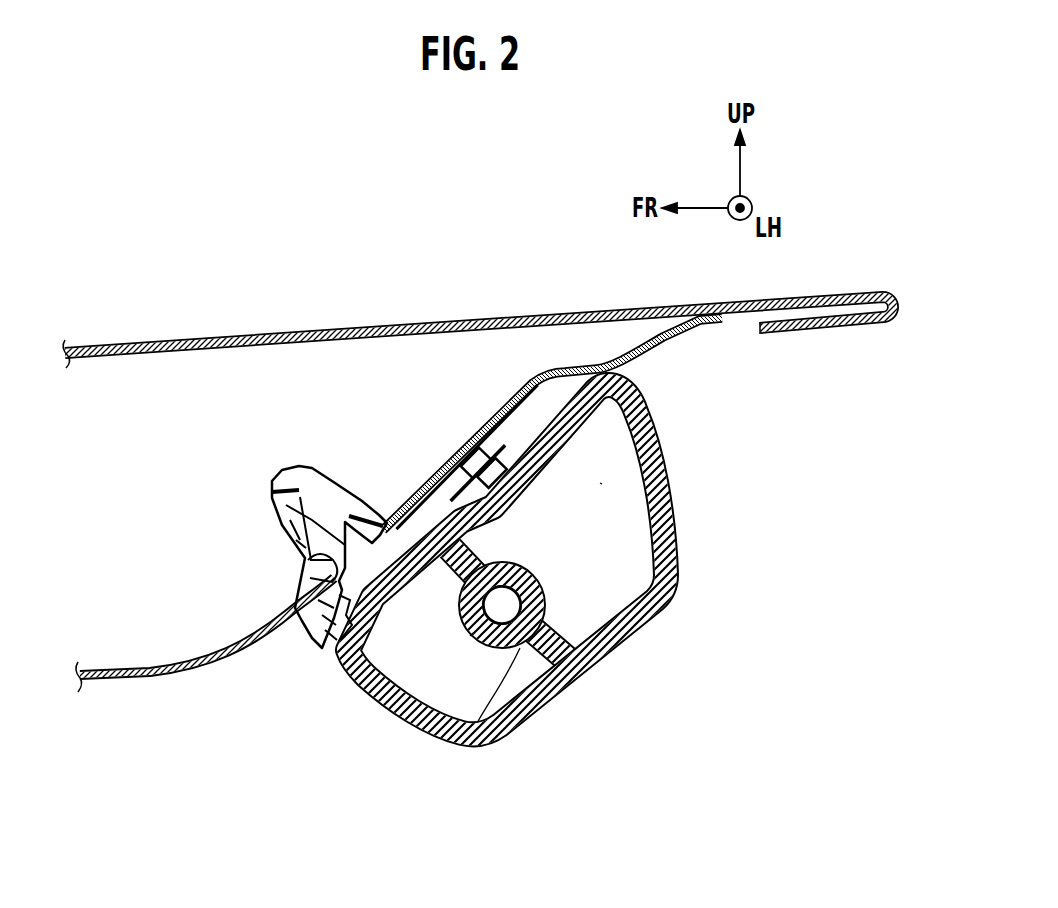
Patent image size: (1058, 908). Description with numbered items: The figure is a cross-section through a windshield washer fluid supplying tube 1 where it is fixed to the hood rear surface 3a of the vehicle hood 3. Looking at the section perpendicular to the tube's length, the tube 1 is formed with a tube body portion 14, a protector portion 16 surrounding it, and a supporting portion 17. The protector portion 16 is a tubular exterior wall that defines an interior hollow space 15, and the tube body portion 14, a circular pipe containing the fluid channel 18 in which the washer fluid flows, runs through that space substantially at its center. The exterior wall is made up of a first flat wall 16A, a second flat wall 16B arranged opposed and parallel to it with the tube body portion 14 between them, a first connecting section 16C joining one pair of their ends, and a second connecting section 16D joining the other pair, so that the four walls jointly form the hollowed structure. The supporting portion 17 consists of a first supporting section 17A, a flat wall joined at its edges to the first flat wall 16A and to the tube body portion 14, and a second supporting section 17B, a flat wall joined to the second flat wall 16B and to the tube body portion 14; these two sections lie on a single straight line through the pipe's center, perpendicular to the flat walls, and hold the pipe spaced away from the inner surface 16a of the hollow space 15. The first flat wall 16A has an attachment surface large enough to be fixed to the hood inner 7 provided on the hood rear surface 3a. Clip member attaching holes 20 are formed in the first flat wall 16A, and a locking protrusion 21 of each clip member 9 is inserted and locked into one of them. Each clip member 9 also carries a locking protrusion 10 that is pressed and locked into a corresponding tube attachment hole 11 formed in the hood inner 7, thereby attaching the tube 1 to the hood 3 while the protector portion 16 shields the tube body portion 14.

The tube 1 is at (585, 705).
The hood 3 is at (350, 329).
The hood rear surface 3a is at (733, 325).
The hood inner 7 is at (140, 684).
The clip member 9 is at (445, 455).
The locking protrusion 10 is at (283, 480).
The tube attachment hole 11 is at (300, 560).
The tube body portion 14 is at (472, 634).
The interior hollow space 15 is at (600, 485).
The protector portion 16 is at (501, 559).
The first flat wall 16A is at (490, 440).
The inner surface 16a is at (547, 407).
The second flat wall 16B is at (612, 633).
The first connecting section 16C is at (655, 432).
The second connecting section 16D is at (345, 655).
The supporting portion 17 is at (426, 676).
The first supporting section 17A is at (431, 578).
The second supporting section 17B is at (470, 736).
The fluid channel 18 is at (510, 603).
The clip member attaching hole 20 is at (483, 508).
The locking protrusion 21 is at (478, 518).